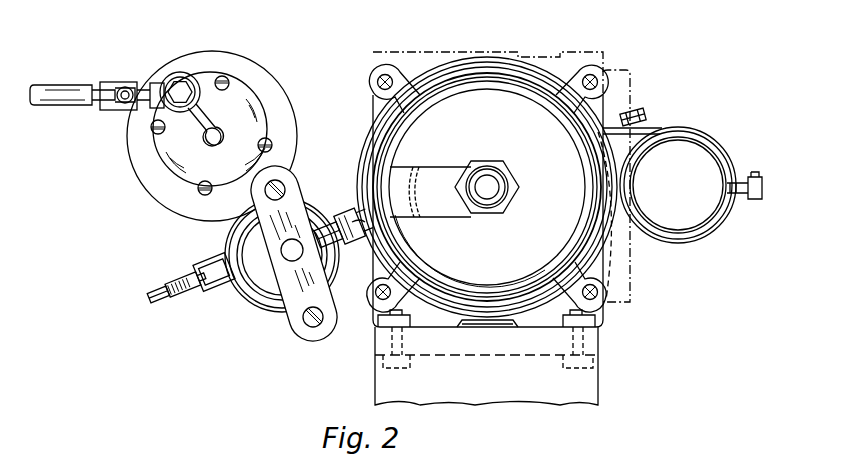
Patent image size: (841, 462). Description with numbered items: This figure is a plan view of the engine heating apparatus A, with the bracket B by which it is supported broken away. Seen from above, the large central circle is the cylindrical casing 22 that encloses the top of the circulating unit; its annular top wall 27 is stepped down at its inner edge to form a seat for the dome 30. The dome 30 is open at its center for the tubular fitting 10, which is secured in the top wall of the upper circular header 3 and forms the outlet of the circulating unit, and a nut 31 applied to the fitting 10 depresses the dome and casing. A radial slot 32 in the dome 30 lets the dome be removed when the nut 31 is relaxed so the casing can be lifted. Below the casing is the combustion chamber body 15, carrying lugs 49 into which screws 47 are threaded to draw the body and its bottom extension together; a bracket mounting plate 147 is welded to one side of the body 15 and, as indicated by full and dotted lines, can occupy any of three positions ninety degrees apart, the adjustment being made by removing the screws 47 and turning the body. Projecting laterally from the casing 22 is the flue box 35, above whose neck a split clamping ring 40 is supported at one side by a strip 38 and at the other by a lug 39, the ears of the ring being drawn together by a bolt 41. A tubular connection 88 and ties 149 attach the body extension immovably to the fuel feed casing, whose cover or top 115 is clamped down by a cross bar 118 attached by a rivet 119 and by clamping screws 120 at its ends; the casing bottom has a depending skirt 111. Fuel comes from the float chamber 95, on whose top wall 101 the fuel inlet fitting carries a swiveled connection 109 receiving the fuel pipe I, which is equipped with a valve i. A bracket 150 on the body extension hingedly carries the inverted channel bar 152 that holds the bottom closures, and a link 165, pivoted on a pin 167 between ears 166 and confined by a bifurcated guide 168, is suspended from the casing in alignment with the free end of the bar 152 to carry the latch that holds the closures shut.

The fuel pipe I is at (70, 88).
The valve i is at (129, 76).
The connection 109 is at (215, 42).
The top wall of the float chamber 101 is at (240, 100).
The float chamber 95 is at (140, 150).
The clamping screws 120 is at (262, 190).
The cross bar 118 is at (265, 230).
The inverted channel bar 152 is at (645, 125).
The pin 167 is at (198, 270).
The bifurcated guide 168 is at (160, 296).
The link 165 is at (183, 303).
The ears 166 is at (208, 303).
The rivet 119 is at (270, 268).
The top 115 is at (290, 255).
The depending skirt 111 is at (282, 312).
The annular top wall 27 is at (372, 156).
The ties 149 is at (358, 195).
The apparatus A is at (361, 104).
The screws 47 is at (378, 75).
The lugs 49 is at (388, 68).
The combustion chamber body 15 is at (425, 80).
The cylindrical casing 22 is at (446, 70).
The bracket mounting plate 147 is at (518, 55).
The bracket 150 is at (640, 115).
The flue box 35 is at (714, 152).
The bolt 41 is at (756, 174).
The lug 39 is at (762, 190).
The split clamping ring 40 is at (720, 215).
The radial slot 32 is at (455, 152).
The nut 31 is at (500, 163).
The upper circular header 3 is at (418, 190).
The tubular fitting 10 is at (506, 198).
The strip 38 is at (600, 186).
The tubular connection 88 is at (370, 222).
The dome 30 is at (505, 246).
The bracket B is at (580, 380).